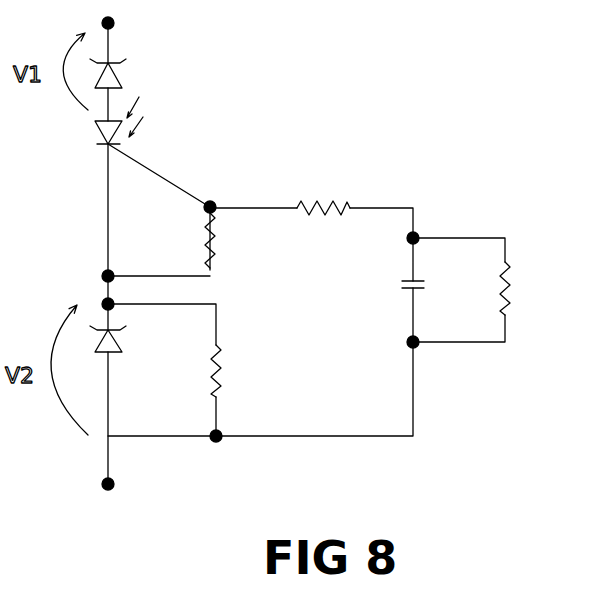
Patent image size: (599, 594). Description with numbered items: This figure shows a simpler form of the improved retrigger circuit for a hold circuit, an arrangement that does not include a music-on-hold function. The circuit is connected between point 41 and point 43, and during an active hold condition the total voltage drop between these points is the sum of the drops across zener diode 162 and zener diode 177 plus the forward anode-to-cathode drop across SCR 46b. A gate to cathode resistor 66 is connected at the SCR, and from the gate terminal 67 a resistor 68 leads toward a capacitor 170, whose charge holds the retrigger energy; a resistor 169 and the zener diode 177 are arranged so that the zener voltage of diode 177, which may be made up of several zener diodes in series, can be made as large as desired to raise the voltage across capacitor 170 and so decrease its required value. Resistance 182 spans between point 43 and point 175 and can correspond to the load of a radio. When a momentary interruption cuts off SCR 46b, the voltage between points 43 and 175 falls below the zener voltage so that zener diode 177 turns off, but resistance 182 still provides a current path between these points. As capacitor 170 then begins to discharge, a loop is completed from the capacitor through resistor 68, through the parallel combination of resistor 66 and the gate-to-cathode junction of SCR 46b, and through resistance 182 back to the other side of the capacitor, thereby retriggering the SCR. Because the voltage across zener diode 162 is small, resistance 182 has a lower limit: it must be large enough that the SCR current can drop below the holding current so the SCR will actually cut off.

The point 41 is at (114, 20).
The zener diode 162 is at (118, 70).
The SCR 46b is at (100, 141).
The gate terminal 67 is at (170, 175).
The resistor 68 is at (325, 206).
The gate to cathode resistor 66 is at (213, 244).
The point 175 is at (103, 272).
The zener diode 177 is at (116, 352).
The resistance 182 is at (220, 380).
The resistor 169 is at (510, 296).
The capacitor 170 is at (405, 290).
The point 43 is at (114, 488).